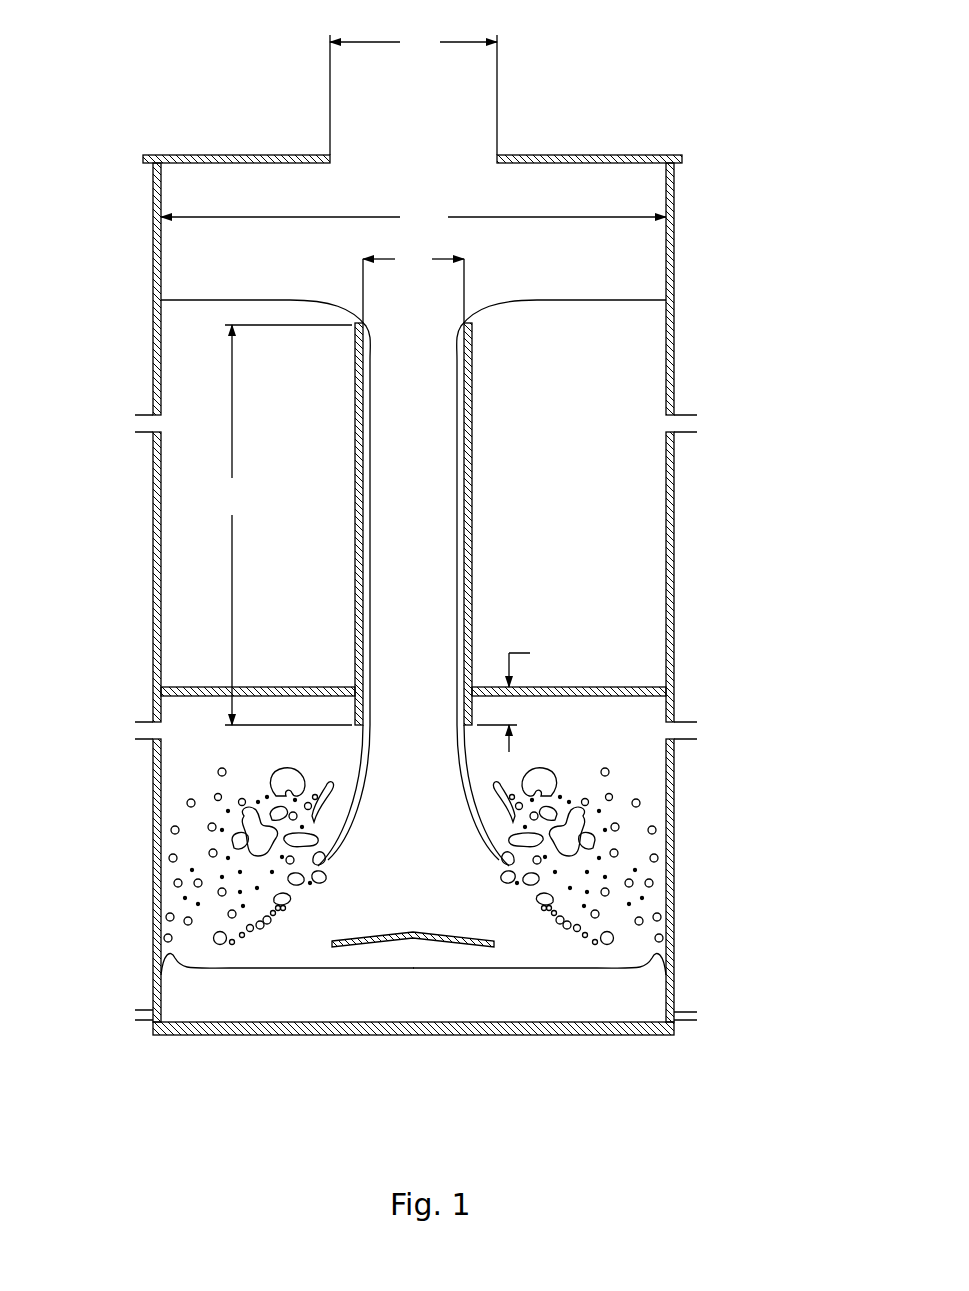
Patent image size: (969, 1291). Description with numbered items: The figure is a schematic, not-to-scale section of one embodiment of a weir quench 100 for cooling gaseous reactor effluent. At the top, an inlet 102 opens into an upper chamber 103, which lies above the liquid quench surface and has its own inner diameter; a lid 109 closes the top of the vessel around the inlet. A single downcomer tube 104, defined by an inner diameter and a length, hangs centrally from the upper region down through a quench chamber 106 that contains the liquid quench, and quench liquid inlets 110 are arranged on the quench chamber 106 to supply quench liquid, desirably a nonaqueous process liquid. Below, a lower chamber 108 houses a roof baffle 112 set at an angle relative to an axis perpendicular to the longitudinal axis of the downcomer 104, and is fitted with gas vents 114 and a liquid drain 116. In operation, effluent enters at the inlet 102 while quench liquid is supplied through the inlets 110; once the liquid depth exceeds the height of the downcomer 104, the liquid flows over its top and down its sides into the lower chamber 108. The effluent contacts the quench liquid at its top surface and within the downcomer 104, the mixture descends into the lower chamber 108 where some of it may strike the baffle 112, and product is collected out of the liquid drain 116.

The weir quench 100 is at (170, 74).
The inlet 102 is at (407, 177).
The upper chamber 103 is at (674, 218).
The downcomer tube 104 is at (473, 490).
The quench chamber 106 is at (674, 500).
The lower chamber 108 is at (674, 858).
The lid 109 is at (674, 165).
The quench liquid inlet 110 is at (698, 418).
The roof baffle 112 is at (450, 950).
The gas vents 114 is at (686, 731).
The liquid drain 116 is at (697, 1015).